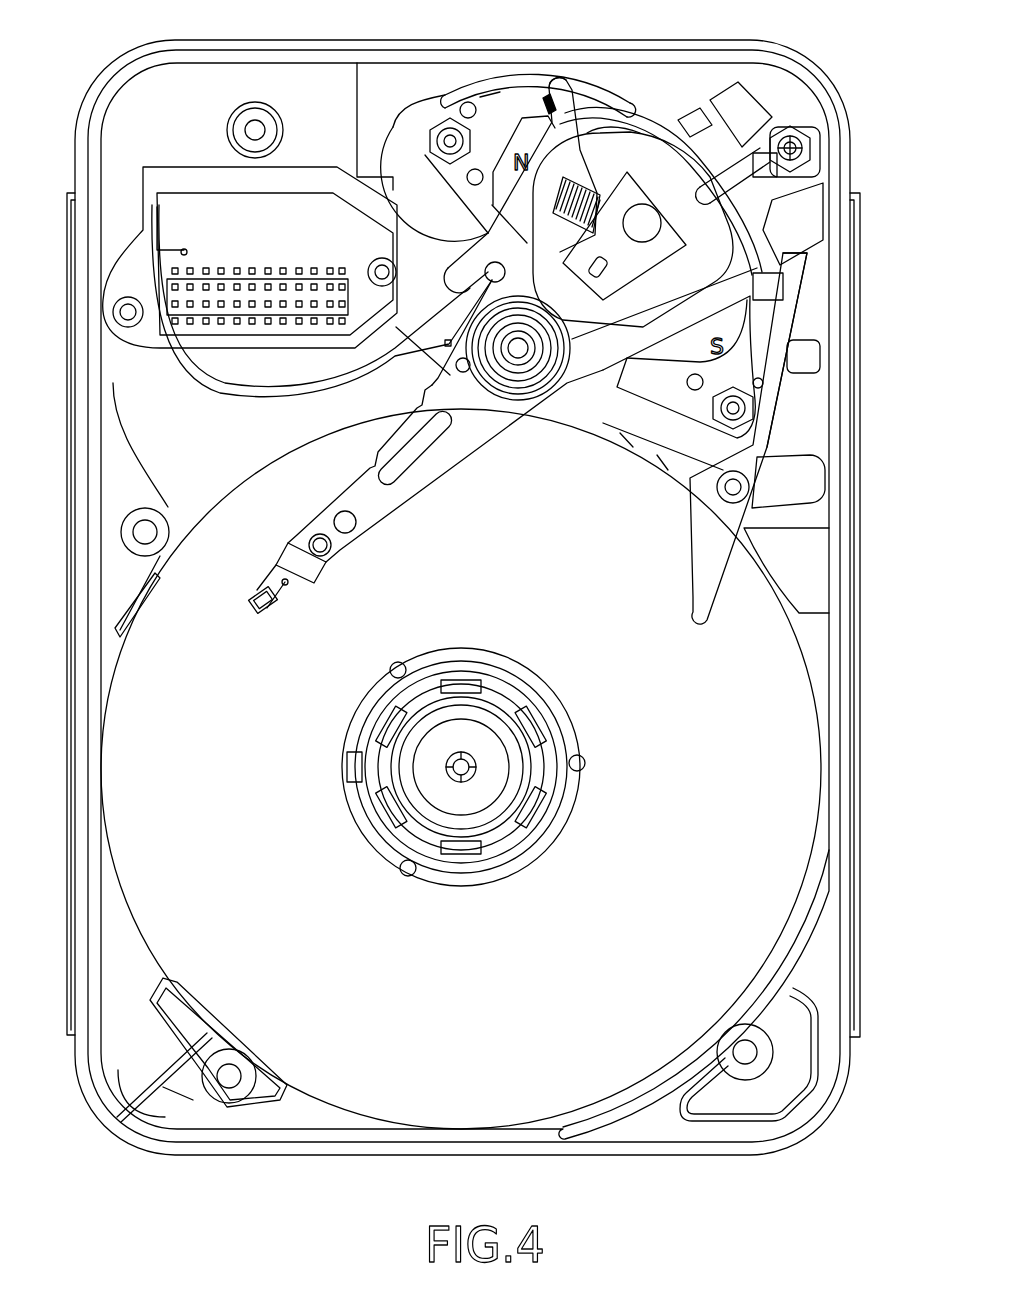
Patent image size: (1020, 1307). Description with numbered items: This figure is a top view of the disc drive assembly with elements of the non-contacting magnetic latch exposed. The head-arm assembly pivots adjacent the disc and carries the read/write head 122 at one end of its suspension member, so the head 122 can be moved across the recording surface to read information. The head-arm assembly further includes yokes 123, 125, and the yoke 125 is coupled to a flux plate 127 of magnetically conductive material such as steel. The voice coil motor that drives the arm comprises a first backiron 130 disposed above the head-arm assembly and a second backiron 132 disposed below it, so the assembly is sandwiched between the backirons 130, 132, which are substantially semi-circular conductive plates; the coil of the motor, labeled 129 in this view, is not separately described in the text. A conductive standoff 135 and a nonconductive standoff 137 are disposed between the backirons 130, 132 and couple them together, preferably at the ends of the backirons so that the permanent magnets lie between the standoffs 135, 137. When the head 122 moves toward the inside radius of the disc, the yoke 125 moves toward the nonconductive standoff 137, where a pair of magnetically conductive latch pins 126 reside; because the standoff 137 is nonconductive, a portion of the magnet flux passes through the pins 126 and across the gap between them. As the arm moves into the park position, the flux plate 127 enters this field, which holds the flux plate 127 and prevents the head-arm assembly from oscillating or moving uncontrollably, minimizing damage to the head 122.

The read/write head 122 is at (263, 613).
The yoke 123 is at (748, 300).
The yoke 125 is at (555, 92).
The non-contacting magnetic latch pins 126 is at (468, 107).
The flux plate 127 is at (547, 98).
The voice coil 129 is at (627, 153).
The first backiron 130 is at (600, 123).
The second backiron 132 is at (490, 97).
The conductive standoff 135 is at (740, 410).
The nonconductive standoff 137 is at (437, 120).